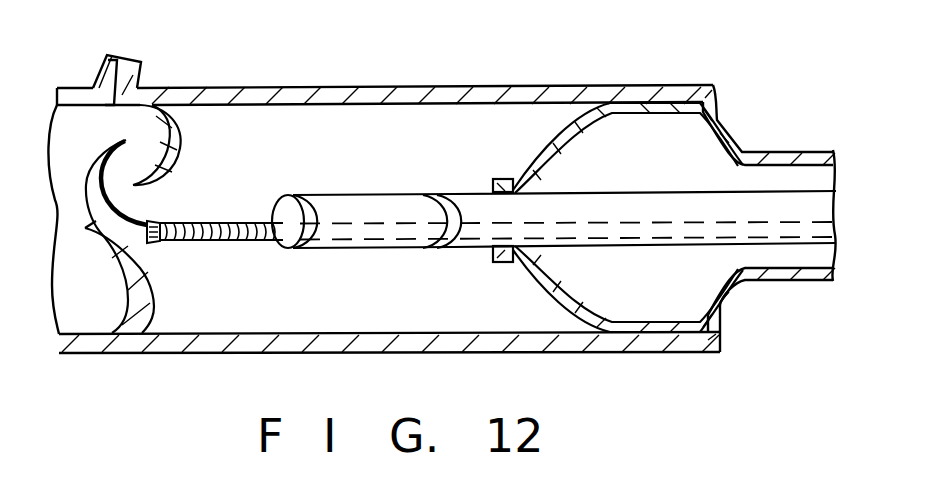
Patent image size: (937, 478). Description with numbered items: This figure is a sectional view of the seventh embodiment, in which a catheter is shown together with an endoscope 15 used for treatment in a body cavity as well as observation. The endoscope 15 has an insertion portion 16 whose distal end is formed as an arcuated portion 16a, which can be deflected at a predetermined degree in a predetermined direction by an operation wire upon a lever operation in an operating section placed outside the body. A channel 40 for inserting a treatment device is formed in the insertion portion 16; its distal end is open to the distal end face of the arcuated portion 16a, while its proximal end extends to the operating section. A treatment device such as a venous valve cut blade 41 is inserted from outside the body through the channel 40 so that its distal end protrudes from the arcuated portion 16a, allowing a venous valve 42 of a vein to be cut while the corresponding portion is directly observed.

The endoscope 15 is at (406, 188).
The insertion portion 16 is at (665, 198).
The arcuated portion 16a is at (378, 214).
The channel 40 is at (637, 229).
The venous valve cut blade 41 is at (222, 224).
The venous valve 42 is at (177, 150).